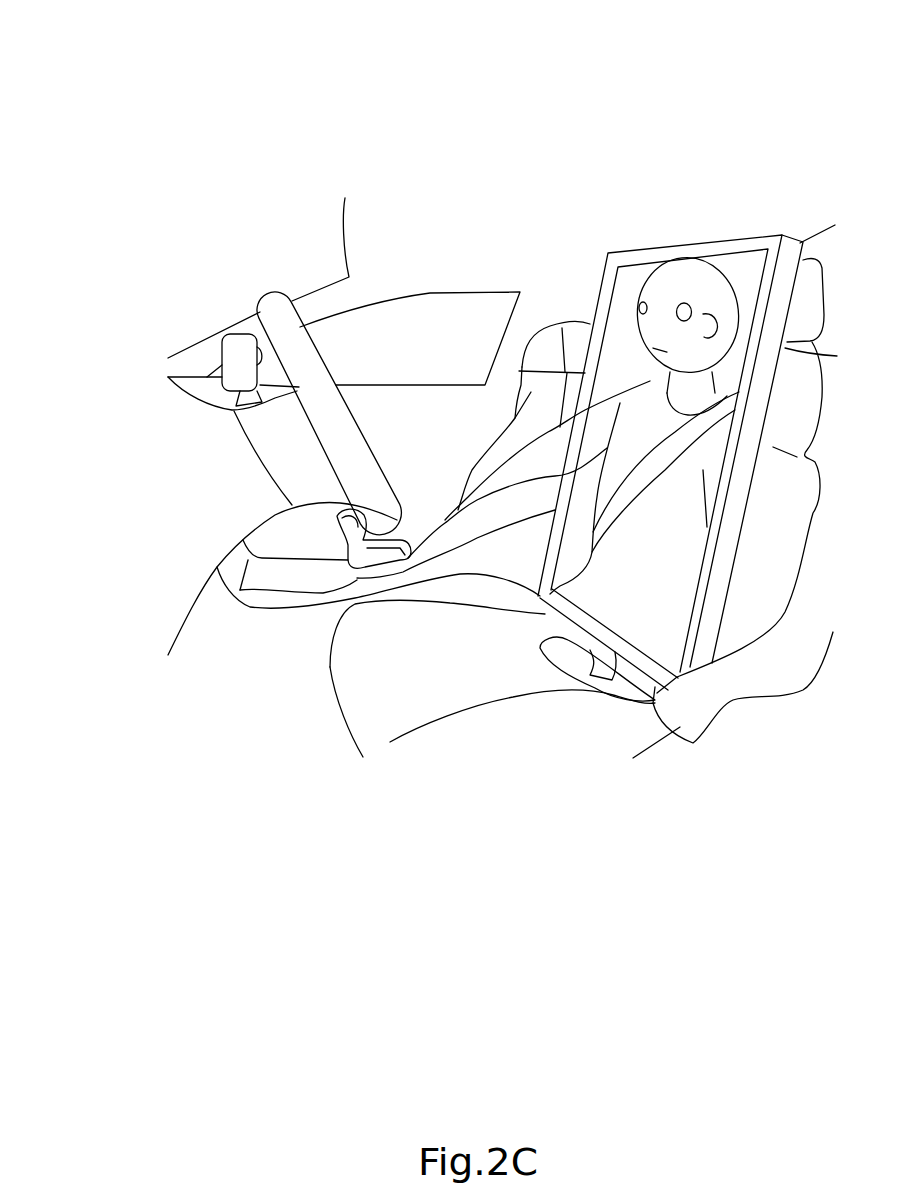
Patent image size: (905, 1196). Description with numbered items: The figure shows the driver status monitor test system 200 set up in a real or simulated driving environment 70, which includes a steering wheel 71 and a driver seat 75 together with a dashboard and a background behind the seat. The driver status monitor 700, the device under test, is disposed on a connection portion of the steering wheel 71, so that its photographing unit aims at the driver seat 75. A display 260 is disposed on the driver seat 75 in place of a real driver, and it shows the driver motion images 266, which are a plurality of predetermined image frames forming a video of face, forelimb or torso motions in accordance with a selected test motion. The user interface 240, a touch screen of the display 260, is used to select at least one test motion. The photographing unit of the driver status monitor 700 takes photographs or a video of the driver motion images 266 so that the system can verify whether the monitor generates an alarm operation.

The driving environment 70 is at (350, 160).
The steering wheel 71 is at (268, 292).
The driver status monitor 700 is at (213, 338).
The driver status monitor test system 200 is at (645, 250).
The user interface 240 is at (625, 315).
The display 260 is at (748, 262).
The driver motion images 266 is at (657, 627).
The driver seat 75 is at (537, 723).